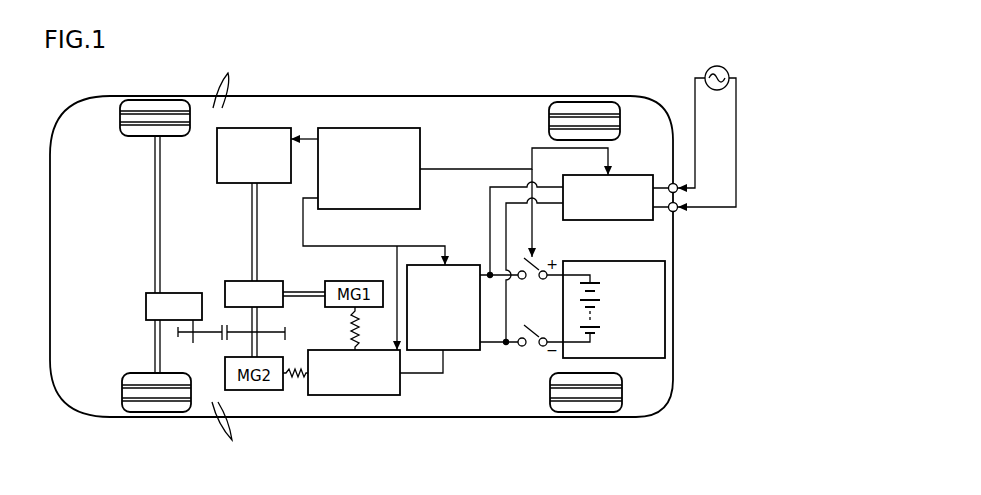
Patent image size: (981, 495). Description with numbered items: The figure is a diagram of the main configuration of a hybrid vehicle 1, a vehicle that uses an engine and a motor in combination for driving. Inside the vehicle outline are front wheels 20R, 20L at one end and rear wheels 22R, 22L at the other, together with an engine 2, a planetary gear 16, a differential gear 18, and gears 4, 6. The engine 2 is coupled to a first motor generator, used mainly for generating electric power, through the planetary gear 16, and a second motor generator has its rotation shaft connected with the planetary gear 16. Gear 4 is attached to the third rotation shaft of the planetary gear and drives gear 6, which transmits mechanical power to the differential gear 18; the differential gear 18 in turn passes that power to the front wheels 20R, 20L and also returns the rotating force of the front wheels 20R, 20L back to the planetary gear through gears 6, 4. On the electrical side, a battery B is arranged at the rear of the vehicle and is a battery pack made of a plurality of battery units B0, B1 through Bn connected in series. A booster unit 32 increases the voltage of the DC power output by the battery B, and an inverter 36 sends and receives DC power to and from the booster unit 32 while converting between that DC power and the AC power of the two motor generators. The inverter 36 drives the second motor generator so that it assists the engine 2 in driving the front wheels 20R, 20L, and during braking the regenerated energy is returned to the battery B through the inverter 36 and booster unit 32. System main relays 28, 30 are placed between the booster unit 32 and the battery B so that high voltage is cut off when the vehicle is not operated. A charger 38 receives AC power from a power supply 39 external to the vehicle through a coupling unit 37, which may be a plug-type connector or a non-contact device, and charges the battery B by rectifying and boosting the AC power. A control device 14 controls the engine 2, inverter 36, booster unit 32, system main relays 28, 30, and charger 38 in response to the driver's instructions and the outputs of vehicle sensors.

The hybrid vehicle 1 is at (500, 96).
The engine 2 is at (275, 128).
The gear 4 is at (285, 340).
The gear 6 is at (180, 342).
The control device 14 is at (375, 128).
The planetary gear 16 is at (240, 282).
The differential gear 18 is at (146, 305).
The front wheel 20R is at (142, 100).
The front wheel 20L is at (146, 412).
The rear wheel 22R is at (572, 102).
The rear wheel 22L is at (573, 412).
The system main relay 28 is at (523, 280).
The system main relay 30 is at (522, 347).
The booster unit 32 is at (466, 350).
The inverter 36 is at (363, 395).
The coupling unit 37 is at (677, 211).
The charger 38 is at (623, 175).
The power supply 39 is at (706, 70).
The battery B is at (606, 356).
The battery unit B0 is at (602, 289).
The battery unit B1 is at (602, 304).
The battery unit Bn is at (602, 329).